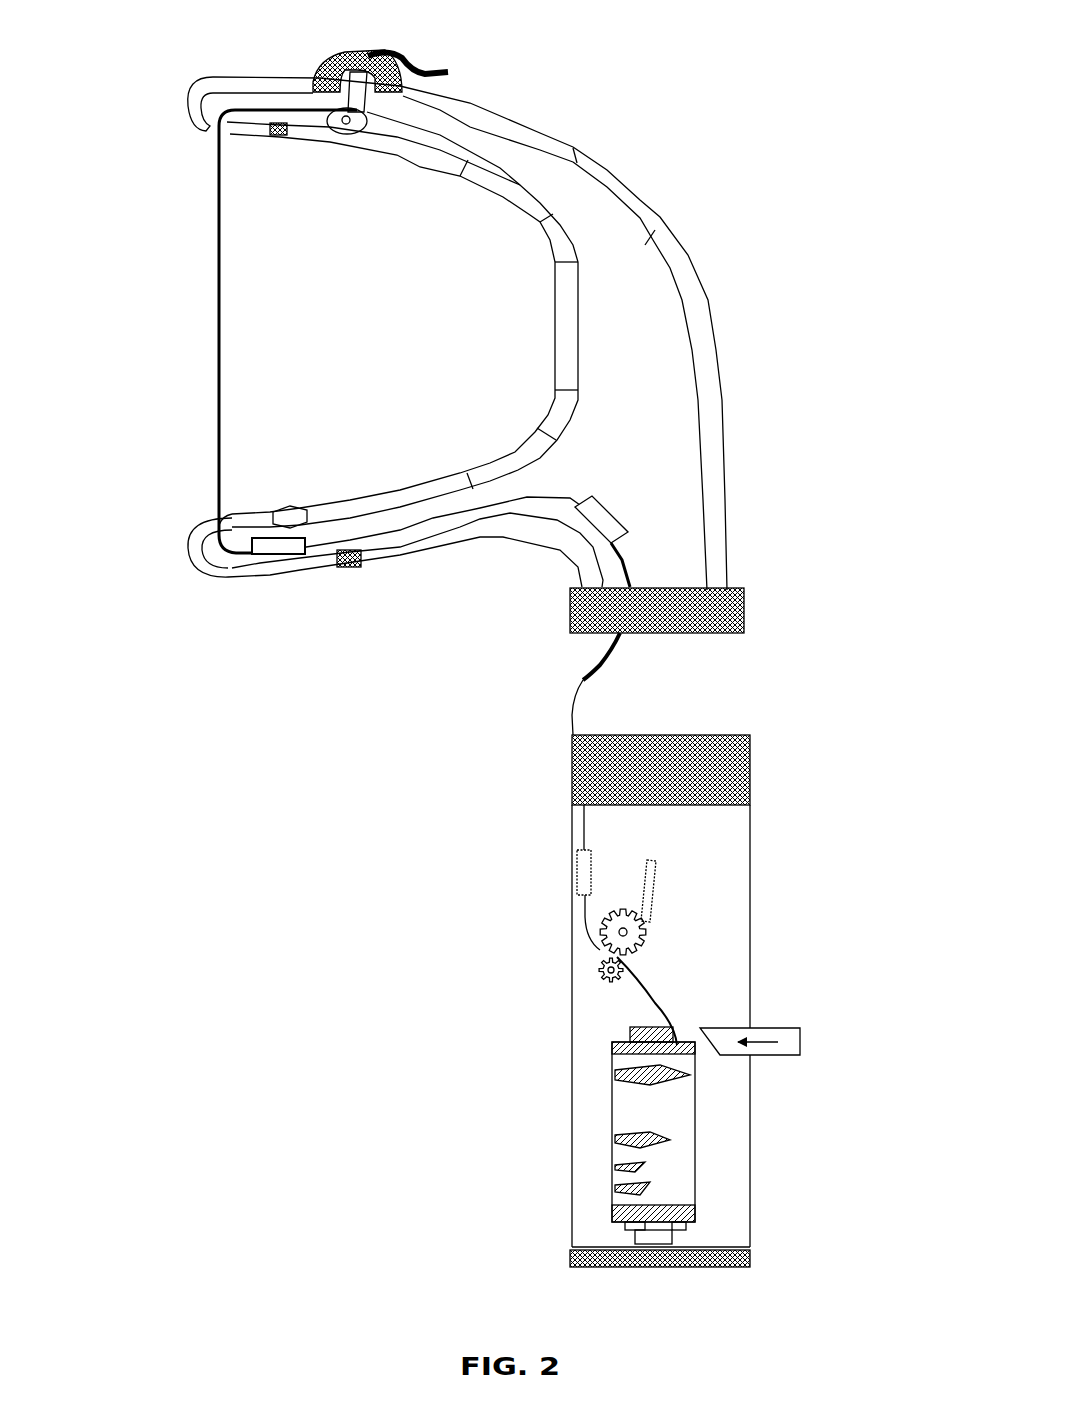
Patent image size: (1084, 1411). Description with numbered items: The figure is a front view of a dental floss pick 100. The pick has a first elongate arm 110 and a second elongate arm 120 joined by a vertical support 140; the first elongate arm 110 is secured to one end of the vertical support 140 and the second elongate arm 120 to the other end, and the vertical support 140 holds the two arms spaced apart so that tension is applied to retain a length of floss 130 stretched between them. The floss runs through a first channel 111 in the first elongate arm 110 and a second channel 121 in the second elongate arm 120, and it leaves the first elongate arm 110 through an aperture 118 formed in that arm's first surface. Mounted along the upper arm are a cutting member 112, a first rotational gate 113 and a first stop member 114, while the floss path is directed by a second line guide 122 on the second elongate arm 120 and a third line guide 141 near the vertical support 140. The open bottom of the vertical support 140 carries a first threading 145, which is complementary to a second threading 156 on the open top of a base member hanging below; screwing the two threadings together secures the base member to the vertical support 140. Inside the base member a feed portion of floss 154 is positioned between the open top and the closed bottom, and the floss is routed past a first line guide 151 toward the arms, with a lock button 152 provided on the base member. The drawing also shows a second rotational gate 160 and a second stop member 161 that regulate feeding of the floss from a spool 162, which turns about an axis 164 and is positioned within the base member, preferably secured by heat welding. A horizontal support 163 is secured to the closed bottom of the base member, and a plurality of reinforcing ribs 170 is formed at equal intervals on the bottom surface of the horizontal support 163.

The dental floss pick 100 is at (116, 80).
The first elongate arm 110 is at (174, 116).
The first channel 111 is at (206, 142).
The cutting member 112 is at (410, 50).
The first rotational gate 113 is at (368, 106).
The first stop member 114 is at (420, 137).
The aperture 118 is at (308, 68).
The second elongate arm 120 is at (182, 558).
The second channel 121 is at (200, 514).
The second line guide 122 is at (265, 560).
The length of floss 130 is at (556, 706).
The vertical support 140 is at (735, 300).
The third line guide 141 is at (620, 508).
The first threading 145 is at (762, 612).
The first line guide 151 is at (566, 865).
The lock button 152 is at (822, 1045).
The feed portion of floss 154 is at (600, 1122).
The second threading 156 is at (762, 765).
The second rotational gate 160 is at (598, 932).
The second stop member 161 is at (662, 892).
The spool 162 is at (628, 1237).
The horizontal support 163 is at (566, 1254).
The axis 164 is at (682, 1232).
The plurality of reinforcing ribs 170 is at (760, 1262).